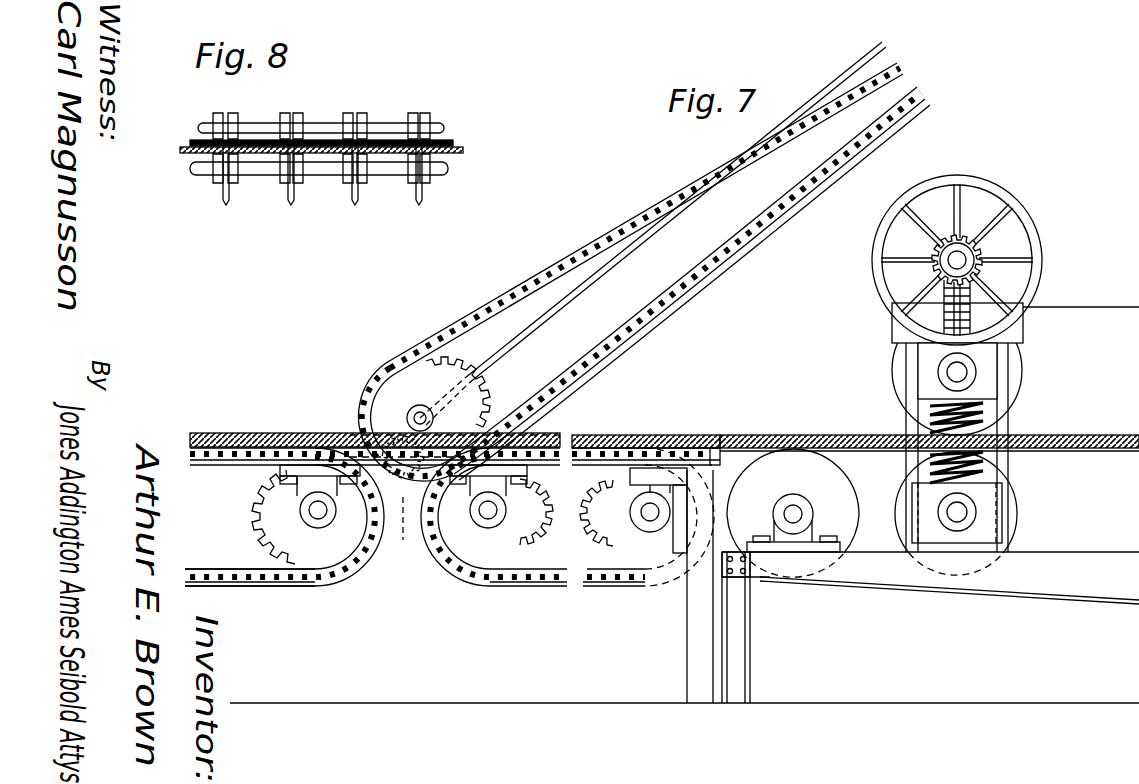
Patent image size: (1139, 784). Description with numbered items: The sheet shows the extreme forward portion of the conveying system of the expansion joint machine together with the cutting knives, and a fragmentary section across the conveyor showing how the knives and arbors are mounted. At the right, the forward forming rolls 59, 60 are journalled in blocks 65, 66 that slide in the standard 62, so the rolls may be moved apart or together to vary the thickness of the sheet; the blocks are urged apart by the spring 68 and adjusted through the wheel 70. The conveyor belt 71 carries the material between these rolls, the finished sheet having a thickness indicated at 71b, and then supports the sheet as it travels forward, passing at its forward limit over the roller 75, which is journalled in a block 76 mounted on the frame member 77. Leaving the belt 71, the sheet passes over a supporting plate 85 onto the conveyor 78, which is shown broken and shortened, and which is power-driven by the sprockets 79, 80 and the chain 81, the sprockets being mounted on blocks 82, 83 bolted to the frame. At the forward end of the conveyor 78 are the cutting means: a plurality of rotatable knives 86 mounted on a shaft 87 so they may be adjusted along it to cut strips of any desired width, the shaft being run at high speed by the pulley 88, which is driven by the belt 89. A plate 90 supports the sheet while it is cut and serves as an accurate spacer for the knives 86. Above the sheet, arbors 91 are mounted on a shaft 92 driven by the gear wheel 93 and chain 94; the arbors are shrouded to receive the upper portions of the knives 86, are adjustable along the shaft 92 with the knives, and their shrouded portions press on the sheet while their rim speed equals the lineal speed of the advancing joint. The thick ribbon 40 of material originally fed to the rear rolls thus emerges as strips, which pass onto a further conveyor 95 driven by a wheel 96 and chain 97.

In FIG. 8, the thick ribbon 40 is at (398, 160).
In FIG. 8, the rotatable knives 86 is at (419, 203).
In FIG. 8, the shaft 87 is at (331, 170).
In FIG. 8, the plate 90 is at (190, 152).
In FIG. 8, the arbors 91 is at (416, 110).
In FIG. 7, the arbors 91 is at (413, 412).
In FIG. 8, the shaft 92 is at (445, 127).
In FIG. 7, the twin roller 59 is at (1014, 378).
In FIG. 7, the twin roller 60 is at (1016, 501).
In FIG. 7, the standard 62 is at (1000, 418).
In FIG. 7, the block 65 is at (985, 385).
In FIG. 7, the block 66 is at (990, 526).
In FIG. 7, the spring 68 is at (1005, 463).
In FIG. 7, the wheel 70 is at (1015, 216).
In FIG. 7, the conveyor belt 71 is at (1126, 449).
In FIG. 7, the finished sheet thickness 71b is at (823, 444).
In FIG. 7, the roller 75 is at (830, 490).
In FIG. 7, the block 76 is at (805, 545).
In FIG. 7, the frame member 77 is at (1112, 568).
In FIG. 7, the conveyor 78 is at (617, 580).
In FIG. 7, the sprocket 79 is at (502, 547).
In FIG. 7, the sprocket 80 is at (620, 535).
In FIG. 7, the chain 81 is at (540, 582).
In FIG. 7, the block 82 is at (480, 490).
In FIG. 7, the block 83 is at (650, 520).
In FIG. 7, the supporting plate 85 is at (737, 447).
In FIG. 7, the pulley 88 is at (404, 529).
In FIG. 7, the belt 89 is at (598, 270).
In FIG. 7, the gear wheel 93 is at (432, 368).
In FIG. 7, the chain 94 is at (528, 284).
In FIG. 7, the conveyor 95 is at (252, 584).
In FIG. 7, the wheel 96 is at (277, 503).
In FIG. 7, the chain 97 is at (217, 575).